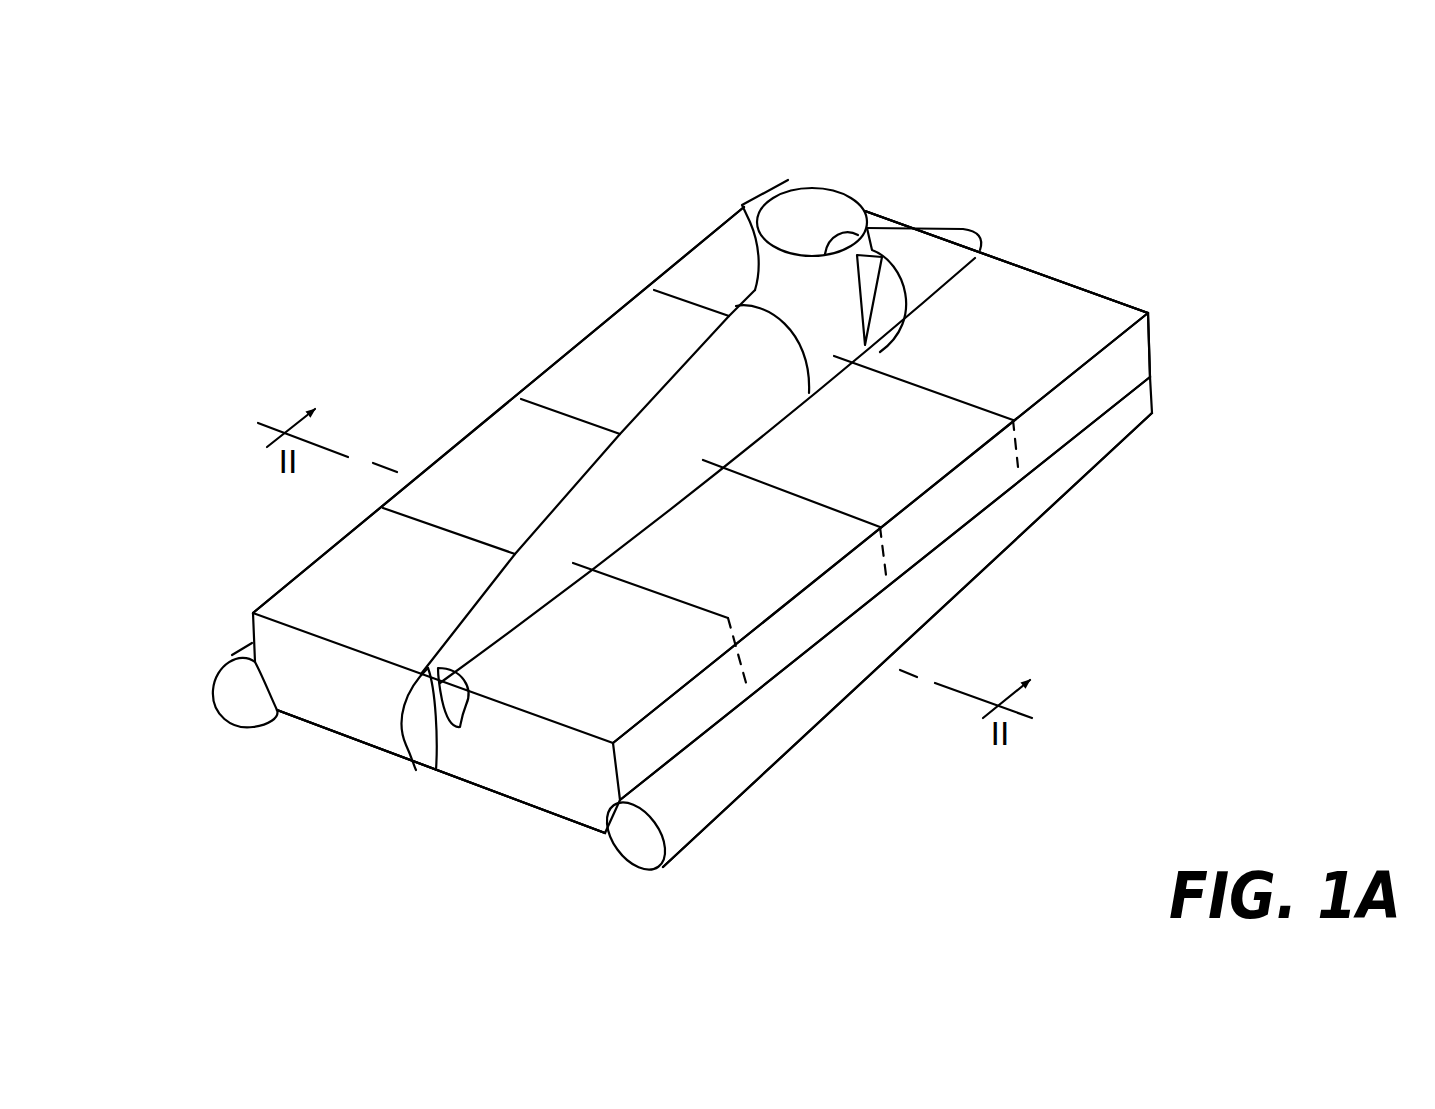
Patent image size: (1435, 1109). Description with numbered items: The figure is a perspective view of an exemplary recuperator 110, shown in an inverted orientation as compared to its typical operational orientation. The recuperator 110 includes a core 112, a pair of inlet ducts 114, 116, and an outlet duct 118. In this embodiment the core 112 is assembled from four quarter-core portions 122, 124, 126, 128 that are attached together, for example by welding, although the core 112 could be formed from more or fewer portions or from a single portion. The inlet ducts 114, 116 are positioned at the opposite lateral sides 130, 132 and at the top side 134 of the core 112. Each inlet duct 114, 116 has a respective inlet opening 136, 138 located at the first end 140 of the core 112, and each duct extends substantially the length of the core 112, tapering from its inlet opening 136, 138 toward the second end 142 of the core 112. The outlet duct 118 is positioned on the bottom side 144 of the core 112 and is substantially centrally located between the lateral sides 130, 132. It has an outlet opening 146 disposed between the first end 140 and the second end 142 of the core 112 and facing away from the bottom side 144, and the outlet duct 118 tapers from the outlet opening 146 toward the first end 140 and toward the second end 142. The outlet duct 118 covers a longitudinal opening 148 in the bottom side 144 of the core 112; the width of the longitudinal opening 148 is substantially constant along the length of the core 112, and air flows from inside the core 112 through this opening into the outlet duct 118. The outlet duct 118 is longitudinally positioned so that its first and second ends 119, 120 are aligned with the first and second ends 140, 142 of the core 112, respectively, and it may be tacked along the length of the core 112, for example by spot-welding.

The recuperator 110 is at (266, 170).
The core 112 is at (581, 365).
The inlet duct 114 is at (243, 652).
The inlet duct 116 is at (743, 778).
The outlet duct 118 is at (942, 240).
The first end of outlet duct 119 is at (460, 702).
The second end of outlet duct 120 is at (985, 248).
The quarter-core portion 122 is at (647, 620).
The quarter-core portion 124 is at (790, 514).
The quarter-core portion 126 is at (923, 409).
The quarter-core portion 128 is at (1006, 279).
The lateral side 130 is at (310, 562).
The lateral side 132 is at (1010, 458).
The top side 134 is at (1144, 303).
The inlet opening 136 is at (228, 705).
The inlet opening 138 is at (642, 862).
The first end 140 is at (578, 822).
The second end 142 is at (1162, 348).
The bottom side 144 is at (382, 635).
The outlet opening 146 is at (840, 189).
The longitudinal opening 148 is at (413, 768).